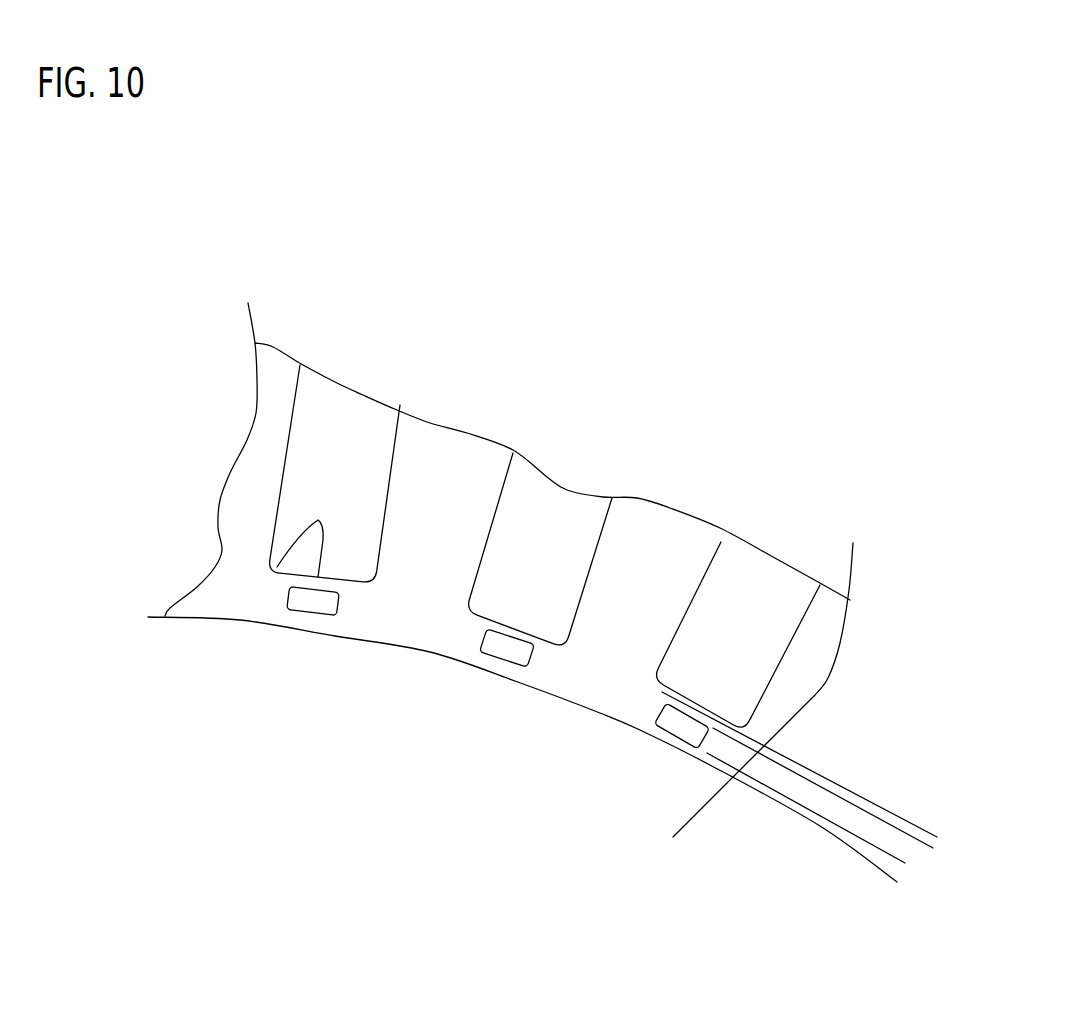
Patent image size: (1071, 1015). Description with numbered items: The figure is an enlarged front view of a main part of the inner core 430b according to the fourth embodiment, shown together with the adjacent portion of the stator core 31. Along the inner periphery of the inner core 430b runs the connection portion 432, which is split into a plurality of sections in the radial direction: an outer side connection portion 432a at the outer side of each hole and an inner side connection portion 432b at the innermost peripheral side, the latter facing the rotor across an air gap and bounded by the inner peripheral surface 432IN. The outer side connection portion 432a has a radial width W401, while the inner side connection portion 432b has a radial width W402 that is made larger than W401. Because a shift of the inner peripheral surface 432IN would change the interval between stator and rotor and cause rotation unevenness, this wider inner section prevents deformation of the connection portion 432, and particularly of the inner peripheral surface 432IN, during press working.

The stator core 31 is at (447, 478).
The inner core 430b is at (202, 417).
The connection portion 432 is at (293, 833).
The outer side connection portion 432a is at (277, 567).
The inner side connection portion 432b is at (317, 623).
The inner peripheral surface 432IN is at (500, 677).
The width of outer side connection portion W401 is at (772, 863).
The width of inner side connection portion W402 is at (907, 767).